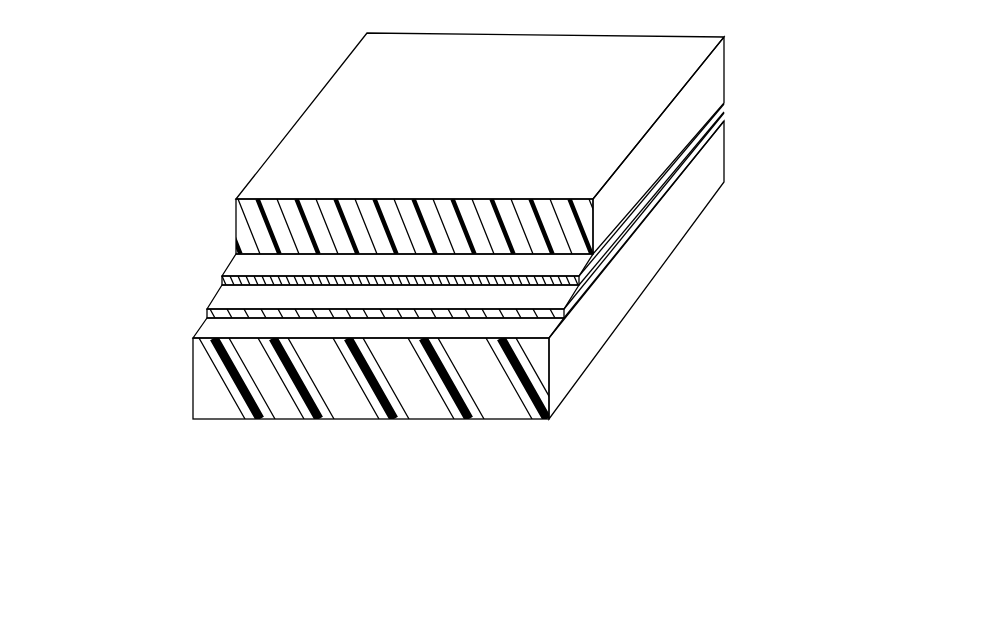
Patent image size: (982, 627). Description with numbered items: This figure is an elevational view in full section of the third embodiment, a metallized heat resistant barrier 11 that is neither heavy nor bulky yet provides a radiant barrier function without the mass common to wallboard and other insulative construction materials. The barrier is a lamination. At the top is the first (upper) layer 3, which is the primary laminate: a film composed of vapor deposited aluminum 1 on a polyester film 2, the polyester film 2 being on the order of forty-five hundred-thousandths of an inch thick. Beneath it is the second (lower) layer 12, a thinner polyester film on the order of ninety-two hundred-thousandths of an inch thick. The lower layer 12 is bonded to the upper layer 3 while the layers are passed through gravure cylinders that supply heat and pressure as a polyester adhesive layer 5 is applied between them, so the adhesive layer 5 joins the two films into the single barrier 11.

The vapor deposited aluminum 1 is at (688, 148).
The polyester film 2 is at (694, 112).
The first (upper) layer 3 is at (481, 159).
The polyester adhesive layer 5 is at (640, 223).
The metallized heat resistant barrier 11 is at (439, 276).
The second (lower) layer 12 is at (605, 328).